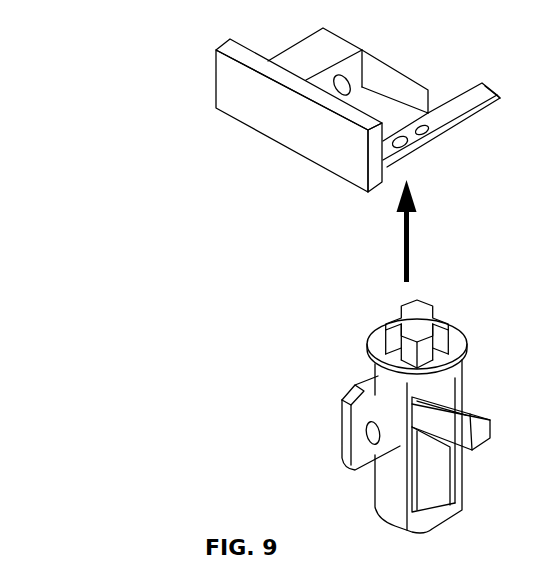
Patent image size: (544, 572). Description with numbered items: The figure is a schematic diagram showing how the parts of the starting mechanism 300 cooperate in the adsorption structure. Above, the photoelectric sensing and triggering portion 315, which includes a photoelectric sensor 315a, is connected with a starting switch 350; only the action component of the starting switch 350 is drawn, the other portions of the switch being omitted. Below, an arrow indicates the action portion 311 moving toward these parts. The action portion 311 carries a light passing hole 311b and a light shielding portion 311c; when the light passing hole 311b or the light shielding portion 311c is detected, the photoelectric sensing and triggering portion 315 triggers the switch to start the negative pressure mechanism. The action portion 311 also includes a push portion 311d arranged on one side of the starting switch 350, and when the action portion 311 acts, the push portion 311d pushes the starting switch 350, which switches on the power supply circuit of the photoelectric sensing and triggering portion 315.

The starting mechanism 300 is at (105, 48).
The starting switch 350 is at (447, 110).
The photoelectric sensing and triggering portion 315 is at (284, 115).
The photoelectric sensor 315a is at (295, 110).
The action portion 311 is at (388, 343).
The light passing hole 311b is at (375, 429).
The light shielding portion 311c is at (373, 450).
The push portion 311d is at (455, 422).